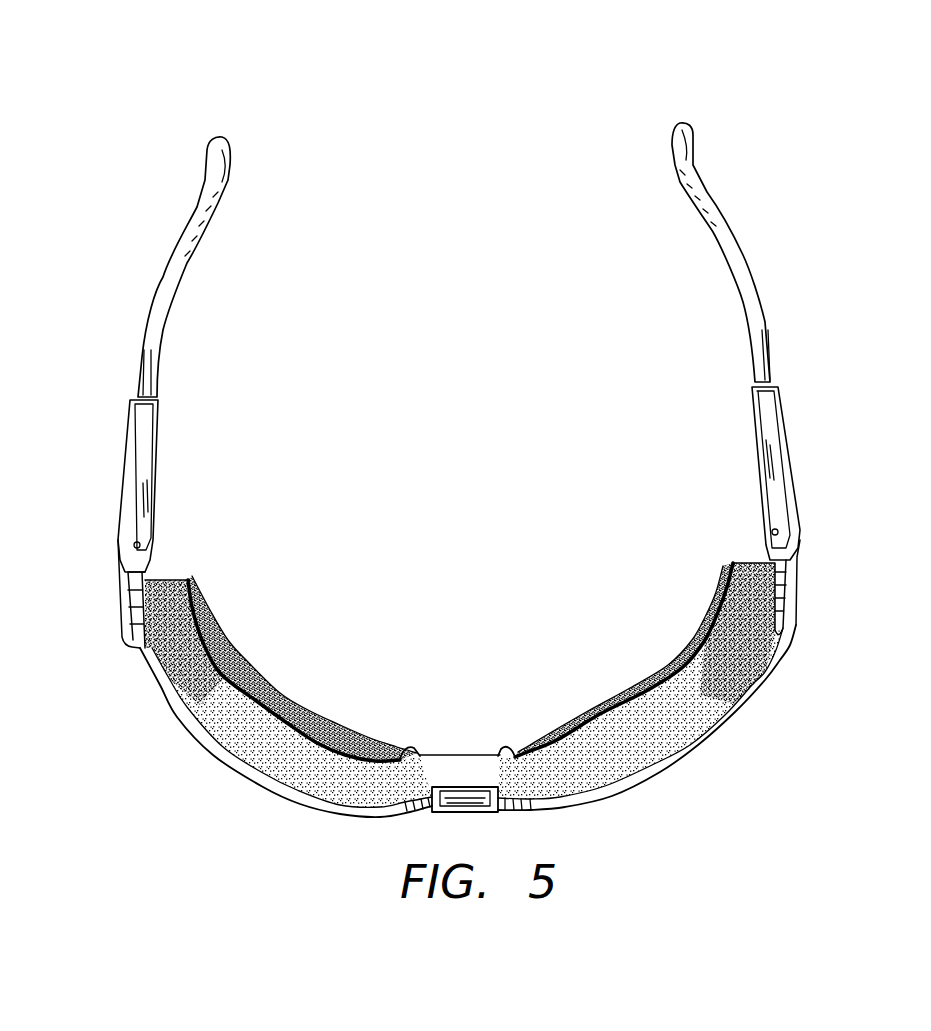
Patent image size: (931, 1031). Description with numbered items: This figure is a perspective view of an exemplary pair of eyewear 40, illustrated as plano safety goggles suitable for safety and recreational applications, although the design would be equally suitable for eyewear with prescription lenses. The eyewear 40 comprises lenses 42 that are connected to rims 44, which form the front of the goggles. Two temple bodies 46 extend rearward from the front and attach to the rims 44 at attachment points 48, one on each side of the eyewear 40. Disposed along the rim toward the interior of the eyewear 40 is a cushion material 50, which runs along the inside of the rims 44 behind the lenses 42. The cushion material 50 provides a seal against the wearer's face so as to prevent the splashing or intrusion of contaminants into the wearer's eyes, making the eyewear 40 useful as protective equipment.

The eyewear 40 is at (462, 84).
The lenses 42 is at (302, 805).
The rims 44 is at (242, 771).
The temple bodies 46 is at (148, 296).
The attachment points 48 is at (139, 650).
The cushion material 50 is at (233, 673).